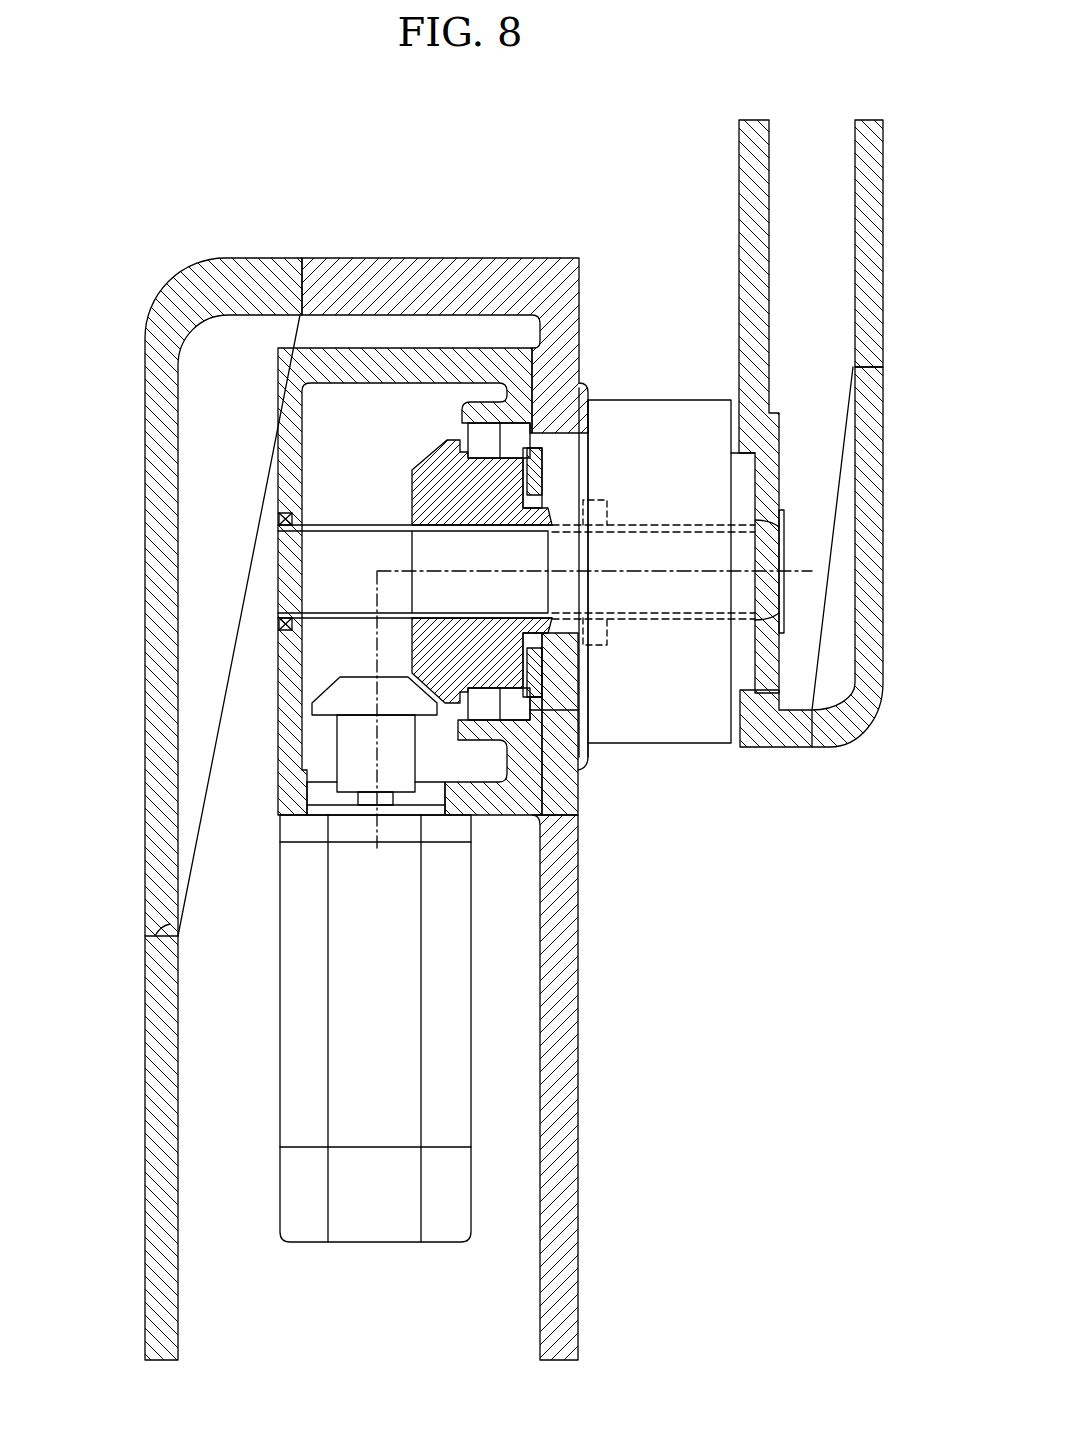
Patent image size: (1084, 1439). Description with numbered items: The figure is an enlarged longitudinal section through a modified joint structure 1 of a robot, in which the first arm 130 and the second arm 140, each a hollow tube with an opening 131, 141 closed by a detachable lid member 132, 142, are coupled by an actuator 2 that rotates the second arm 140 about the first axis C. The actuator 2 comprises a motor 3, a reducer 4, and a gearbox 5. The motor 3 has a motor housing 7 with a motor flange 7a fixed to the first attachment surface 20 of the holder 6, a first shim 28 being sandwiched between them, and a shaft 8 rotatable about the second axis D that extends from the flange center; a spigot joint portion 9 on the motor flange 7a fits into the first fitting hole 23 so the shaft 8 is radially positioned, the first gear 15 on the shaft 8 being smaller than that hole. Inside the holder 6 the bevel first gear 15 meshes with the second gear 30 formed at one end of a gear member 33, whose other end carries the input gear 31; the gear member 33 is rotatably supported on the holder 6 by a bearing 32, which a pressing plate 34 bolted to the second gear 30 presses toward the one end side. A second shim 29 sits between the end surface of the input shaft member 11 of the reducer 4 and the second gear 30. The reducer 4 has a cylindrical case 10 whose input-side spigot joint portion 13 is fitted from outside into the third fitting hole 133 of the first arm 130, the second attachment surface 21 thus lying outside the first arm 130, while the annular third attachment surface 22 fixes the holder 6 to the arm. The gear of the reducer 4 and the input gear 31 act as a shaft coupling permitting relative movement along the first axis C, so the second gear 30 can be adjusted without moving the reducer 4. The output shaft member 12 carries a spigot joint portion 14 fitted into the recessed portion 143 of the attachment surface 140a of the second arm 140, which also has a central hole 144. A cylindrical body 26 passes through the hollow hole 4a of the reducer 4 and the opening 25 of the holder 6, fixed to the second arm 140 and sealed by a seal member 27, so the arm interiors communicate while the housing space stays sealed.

The joint structure 1 is at (128, 200).
The actuator 2 is at (190, 428).
The motor 3 is at (482, 1077).
The reducer 4 is at (661, 348).
The hollow hole 4a is at (600, 530).
The gearbox 5 is at (246, 400).
The holder 6 is at (266, 478).
The motor housing 7 is at (470, 968).
The motor flange 7a is at (300, 800).
The shaft 8 is at (395, 798).
The spigot joint portion 9 is at (335, 782).
The case 10 is at (633, 388).
The input shaft member 11 is at (566, 488).
The output shaft member 12 is at (774, 454).
The spigot joint portion 13 is at (588, 425).
The spigot joint portion 14 is at (735, 437).
The first gear 15 is at (312, 692).
The first attachment surface 20 is at (508, 817).
The second attachment surface 21 is at (588, 730).
The third attachment surface 22 is at (535, 782).
The first fitting hole 23 is at (318, 815).
The opening 25 is at (300, 614).
The cylindrical body 26 is at (318, 522).
The seal member 27 is at (280, 518).
The first shim 28 is at (350, 815).
The second shim 29 is at (466, 688).
The second gear 30 is at (430, 450).
The input gear 31 is at (598, 656).
The bearing 32 is at (535, 706).
The gear member 33 is at (403, 482).
The pressing plate 34 is at (548, 668).
The first arm 130 is at (134, 1150).
The opening 131 is at (148, 936).
The lid member 132 is at (148, 630).
The third fitting hole 133 is at (553, 437).
The second arm 140 is at (893, 255).
The attachment surface 140a is at (748, 484).
The opening 141 is at (862, 372).
The lid member 142 is at (885, 580).
The recessed portion 143 is at (790, 738).
The central hole 144 is at (778, 603).
The first axis C is at (795, 565).
The second axis D is at (380, 832).